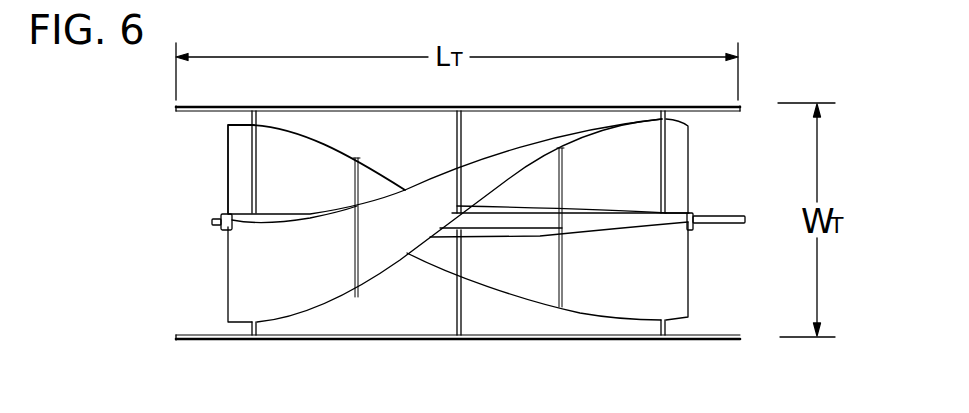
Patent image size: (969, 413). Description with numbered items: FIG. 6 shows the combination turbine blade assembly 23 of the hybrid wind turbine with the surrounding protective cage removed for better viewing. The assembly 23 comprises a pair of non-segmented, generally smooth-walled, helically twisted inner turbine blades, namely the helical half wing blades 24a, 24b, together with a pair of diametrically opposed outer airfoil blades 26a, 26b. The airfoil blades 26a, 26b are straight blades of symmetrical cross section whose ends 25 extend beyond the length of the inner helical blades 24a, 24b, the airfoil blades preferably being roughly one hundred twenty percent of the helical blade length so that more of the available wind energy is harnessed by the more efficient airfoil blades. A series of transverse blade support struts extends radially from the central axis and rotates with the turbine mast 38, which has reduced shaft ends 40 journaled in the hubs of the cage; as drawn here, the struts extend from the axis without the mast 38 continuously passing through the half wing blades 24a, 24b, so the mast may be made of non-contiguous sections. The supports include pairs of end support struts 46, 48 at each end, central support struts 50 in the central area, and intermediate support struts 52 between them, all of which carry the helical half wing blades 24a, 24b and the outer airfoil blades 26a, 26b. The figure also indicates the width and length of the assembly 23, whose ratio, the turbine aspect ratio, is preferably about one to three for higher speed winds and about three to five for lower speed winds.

The combination turbine blade assembly 23 is at (630, 73).
The helical half wing blade 24a is at (683, 160).
The helical half wing blade 24b is at (683, 277).
The end of airfoil blade 25 is at (741, 107).
The outer airfoil blade 26a is at (332, 108).
The outer airfoil blade 26b is at (362, 340).
The turbine mast 38 is at (228, 215).
The shaft end 40 is at (212, 219).
The end support strut 46 is at (668, 118).
The end support strut 48 is at (250, 116).
The central support strut 50 is at (465, 116).
The intermediate support strut 52 is at (358, 176).